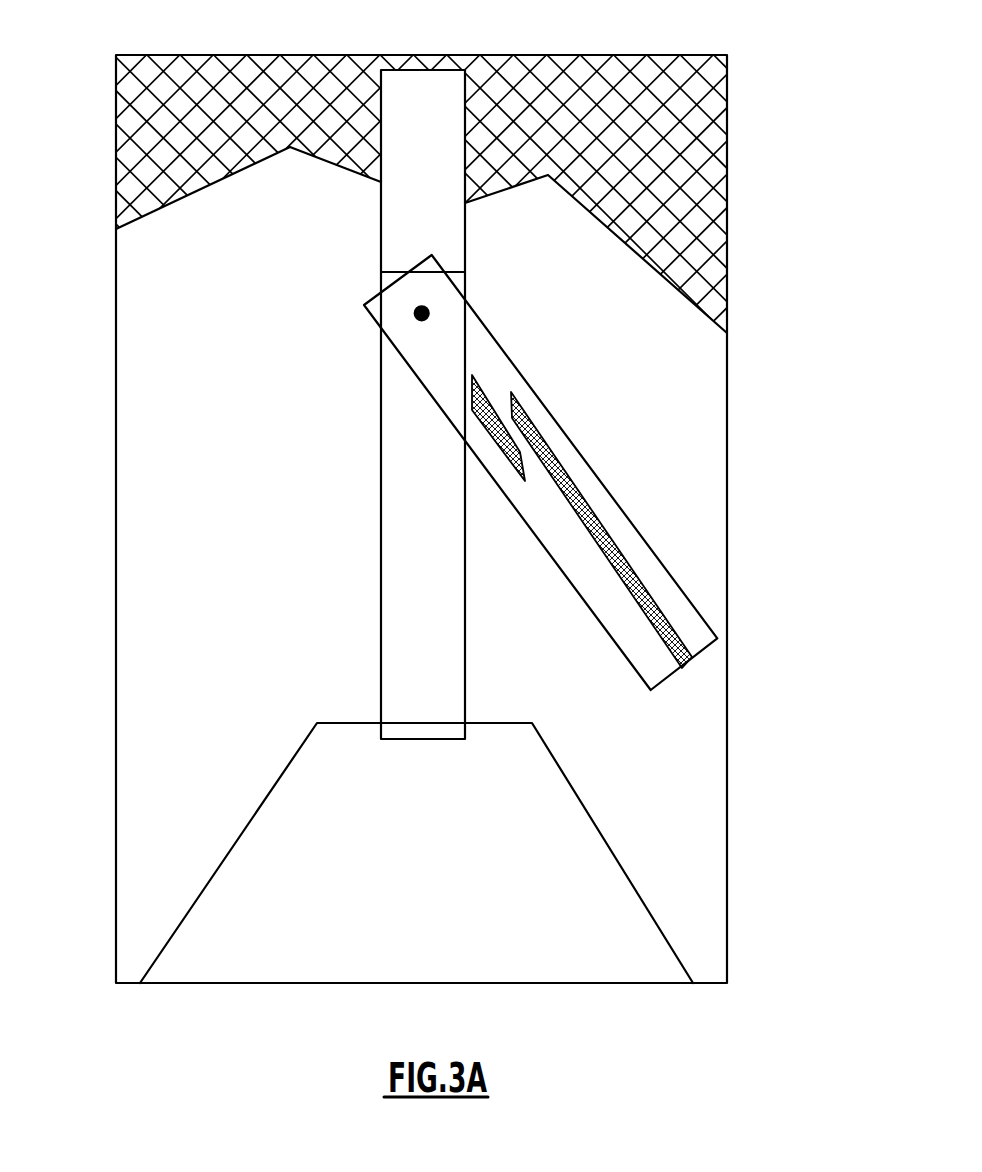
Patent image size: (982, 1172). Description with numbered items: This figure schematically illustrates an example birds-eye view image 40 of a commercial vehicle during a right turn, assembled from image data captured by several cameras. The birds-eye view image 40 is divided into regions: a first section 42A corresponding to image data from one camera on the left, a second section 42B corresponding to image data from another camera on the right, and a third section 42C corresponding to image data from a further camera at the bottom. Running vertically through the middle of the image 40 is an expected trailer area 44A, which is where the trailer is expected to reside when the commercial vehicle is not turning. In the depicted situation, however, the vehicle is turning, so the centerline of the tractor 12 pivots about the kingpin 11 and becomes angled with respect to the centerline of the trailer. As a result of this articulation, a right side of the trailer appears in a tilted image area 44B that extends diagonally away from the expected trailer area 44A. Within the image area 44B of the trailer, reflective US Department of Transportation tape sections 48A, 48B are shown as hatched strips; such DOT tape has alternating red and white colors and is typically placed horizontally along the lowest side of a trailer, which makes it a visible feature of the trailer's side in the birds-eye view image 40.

The kingpin 11 is at (429, 310).
The tractor 12 is at (403, 82).
The birds-eye view image 40 is at (768, 270).
The first section 42A is at (138, 403).
The second section 42B is at (707, 472).
The third section 42C is at (303, 968).
The expected trailer area 44A is at (381, 527).
The image area 44B is at (593, 614).
The DOT tape section 48A is at (497, 440).
The DOT tape section 48B is at (527, 423).